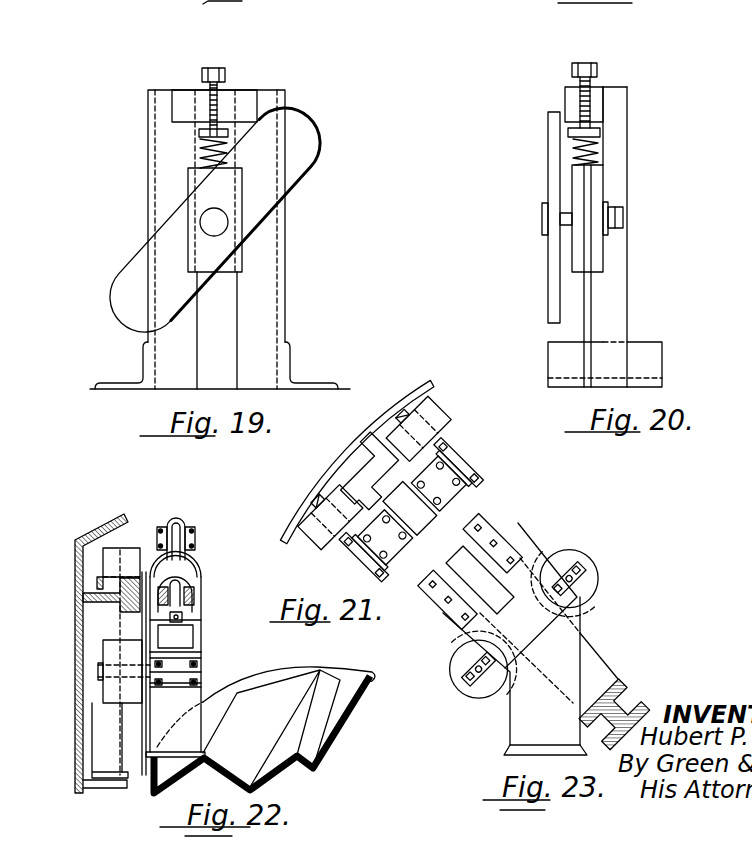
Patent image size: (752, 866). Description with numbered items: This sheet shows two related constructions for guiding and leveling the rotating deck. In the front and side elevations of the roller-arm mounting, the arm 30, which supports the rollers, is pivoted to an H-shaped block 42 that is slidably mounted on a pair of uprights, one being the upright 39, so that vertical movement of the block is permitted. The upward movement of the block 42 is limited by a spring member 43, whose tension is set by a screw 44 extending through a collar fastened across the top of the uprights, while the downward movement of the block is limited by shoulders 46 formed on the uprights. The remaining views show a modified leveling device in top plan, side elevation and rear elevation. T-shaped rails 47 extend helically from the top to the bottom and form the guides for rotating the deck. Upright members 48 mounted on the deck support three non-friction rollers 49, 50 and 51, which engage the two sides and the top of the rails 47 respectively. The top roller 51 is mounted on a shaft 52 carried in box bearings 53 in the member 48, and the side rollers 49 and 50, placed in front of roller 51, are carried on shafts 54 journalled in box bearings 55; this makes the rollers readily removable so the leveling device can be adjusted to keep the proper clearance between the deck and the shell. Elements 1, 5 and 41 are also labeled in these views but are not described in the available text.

In FIG. 22, the side wall 1 is at (75, 548).
In FIG. 21, the side wall 1 is at (335, 464).
In FIG. 22, the chute 5 is at (150, 790).
In FIG. 19, the arm 30 is at (306, 153).
In FIG. 20, the arm 30 is at (553, 188).
In FIG. 20, the upright 39 is at (625, 294).
In FIG. 20, the base 41 is at (607, 364).
In FIG. 20, the H-shaped block 42 is at (600, 192).
In FIG. 19, the spring member 43 is at (224, 143).
In FIG. 20, the spring member 43 is at (600, 152).
In FIG. 19, the screw 44 is at (226, 76).
In FIG. 20, the screw 44 is at (598, 70).
In FIG. 19, the shoulders 46 is at (237, 283).
In FIG. 22, the T-shaped rails 47 is at (120, 600).
In FIG. 21, the T-shaped rails 47 is at (370, 476).
In FIG. 22, the upright members 48 is at (205, 660).
In FIG. 23, the upright members 48 is at (562, 633).
In FIG. 22, the roller 49 is at (130, 551).
In FIG. 21, the roller 49 is at (440, 412).
In FIG. 22, the roller 50 is at (93, 728).
In FIG. 21, the roller 50 is at (310, 535).
In FIG. 22, the roller 51 is at (196, 570).
In FIG. 21, the roller 51 is at (440, 527).
In FIG. 23, the roller 51 is at (467, 548).
In FIG. 22, the shaft 52 is at (190, 616).
In FIG. 21, the shaft 52 is at (413, 540).
In FIG. 21, the box bearings 53 is at (452, 462).
In FIG. 23, the box bearings 53 is at (503, 533).
In FIG. 22, the shafts 54 is at (97, 582).
In FIG. 21, the shafts 54 is at (440, 445).
In FIG. 23, the shafts 54 is at (583, 574).
In FIG. 21, the box bearings 55 is at (482, 477).
In FIG. 23, the box bearings 55 is at (575, 578).